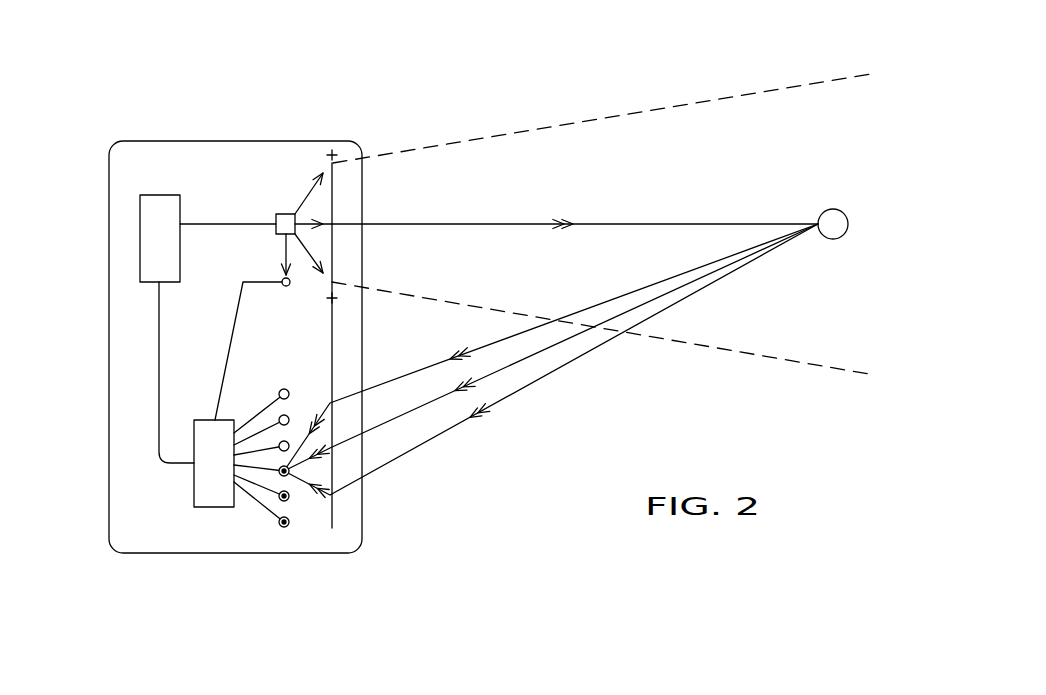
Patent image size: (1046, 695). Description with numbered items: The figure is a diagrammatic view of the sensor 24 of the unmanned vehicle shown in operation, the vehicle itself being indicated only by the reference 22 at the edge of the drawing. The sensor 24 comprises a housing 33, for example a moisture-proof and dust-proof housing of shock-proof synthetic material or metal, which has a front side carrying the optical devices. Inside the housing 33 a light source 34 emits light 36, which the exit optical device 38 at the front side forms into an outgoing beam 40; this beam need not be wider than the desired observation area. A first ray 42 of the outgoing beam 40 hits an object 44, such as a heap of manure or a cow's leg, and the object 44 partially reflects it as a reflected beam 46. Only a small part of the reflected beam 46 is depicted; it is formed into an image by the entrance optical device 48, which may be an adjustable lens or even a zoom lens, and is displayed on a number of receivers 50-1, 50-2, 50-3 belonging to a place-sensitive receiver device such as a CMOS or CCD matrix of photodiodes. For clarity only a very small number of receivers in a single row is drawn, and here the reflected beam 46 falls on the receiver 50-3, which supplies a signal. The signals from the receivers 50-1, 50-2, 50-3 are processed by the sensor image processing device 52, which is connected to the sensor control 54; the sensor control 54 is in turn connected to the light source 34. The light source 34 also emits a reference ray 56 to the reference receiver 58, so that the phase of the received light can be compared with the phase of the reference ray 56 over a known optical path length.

The robot 22 is at (772, 694).
The sensor 24 is at (221, 580).
The housing 33 is at (109, 153).
The light source 34 is at (286, 224).
The light 36 is at (315, 205).
The exit optical device 38 is at (332, 199).
The outgoing beam 40 is at (420, 193).
The first ray 42 is at (503, 224).
The object 44 is at (833, 209).
The reflected beam 46 is at (624, 302).
The entrance optical device 48 is at (329, 513).
The receiver 50-1 is at (284, 522).
The receiver 50-2 is at (284, 496).
The receiver 50-3 is at (284, 471).
The sensor image processing device 52 is at (213, 475).
The sensor control 54 is at (148, 211).
The reference ray 56 is at (286, 255).
The reference receiver 58 is at (286, 287).